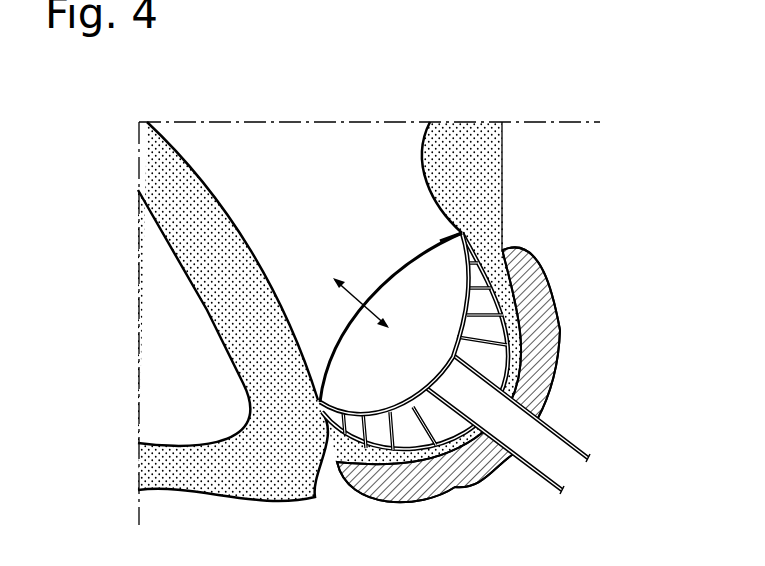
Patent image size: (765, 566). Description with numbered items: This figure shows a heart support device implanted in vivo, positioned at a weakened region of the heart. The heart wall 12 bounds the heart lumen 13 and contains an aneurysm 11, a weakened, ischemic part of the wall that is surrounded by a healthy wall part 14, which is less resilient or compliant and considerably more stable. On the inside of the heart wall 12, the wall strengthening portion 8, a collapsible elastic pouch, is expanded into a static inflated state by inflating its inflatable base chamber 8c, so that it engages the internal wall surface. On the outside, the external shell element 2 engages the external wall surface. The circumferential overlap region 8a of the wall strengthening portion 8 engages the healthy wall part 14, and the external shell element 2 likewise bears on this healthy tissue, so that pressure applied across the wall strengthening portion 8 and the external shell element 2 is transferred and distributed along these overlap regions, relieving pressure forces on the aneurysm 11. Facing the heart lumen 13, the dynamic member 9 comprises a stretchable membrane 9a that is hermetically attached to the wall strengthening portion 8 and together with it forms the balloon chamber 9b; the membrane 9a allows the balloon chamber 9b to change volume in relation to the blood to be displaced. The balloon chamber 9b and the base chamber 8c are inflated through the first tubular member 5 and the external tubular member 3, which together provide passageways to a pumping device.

The external shell element 2 is at (560, 333).
The external tubular member 3 is at (567, 457).
The first tubular member 5 is at (492, 468).
The wall strengthening portion 8 is at (543, 268).
The circumferential overlap region 8a is at (483, 243).
The inflatable base chamber 8c is at (490, 370).
The dynamic member 9 is at (392, 272).
The stretchable membrane 9a is at (418, 250).
The balloon chamber 9b is at (353, 370).
The aneurysm 11 is at (478, 427).
The heart wall 12 is at (480, 163).
The heart lumen 13 is at (320, 160).
The healthy wall part 14 is at (488, 227).